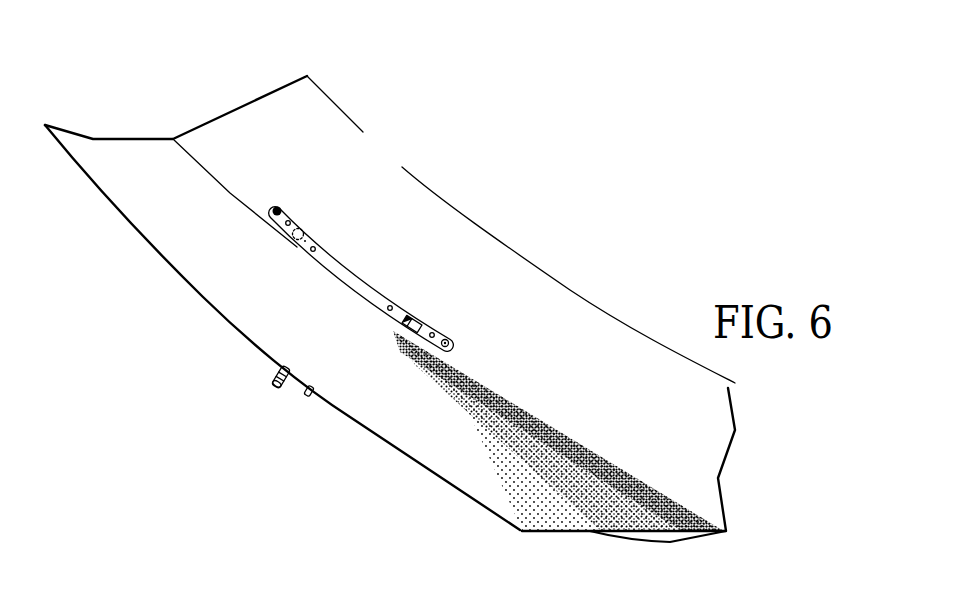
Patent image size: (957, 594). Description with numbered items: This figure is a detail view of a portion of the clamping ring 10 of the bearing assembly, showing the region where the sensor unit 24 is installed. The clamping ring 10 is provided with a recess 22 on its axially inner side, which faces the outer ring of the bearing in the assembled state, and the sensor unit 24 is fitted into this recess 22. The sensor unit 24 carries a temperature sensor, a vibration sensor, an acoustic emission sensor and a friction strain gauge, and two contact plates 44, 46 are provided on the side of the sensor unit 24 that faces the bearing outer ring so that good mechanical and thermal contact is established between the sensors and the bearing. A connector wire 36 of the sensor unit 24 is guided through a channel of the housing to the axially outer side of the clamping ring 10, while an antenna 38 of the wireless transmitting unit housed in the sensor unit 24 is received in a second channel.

The clamping ring 10 is at (240, 293).
The recess 22 is at (346, 280).
The sensor unit 24 is at (362, 300).
The connector wire 36 is at (273, 383).
The antenna 38 is at (310, 396).
The contact plate 44 is at (417, 318).
The contact plate 46 is at (300, 233).